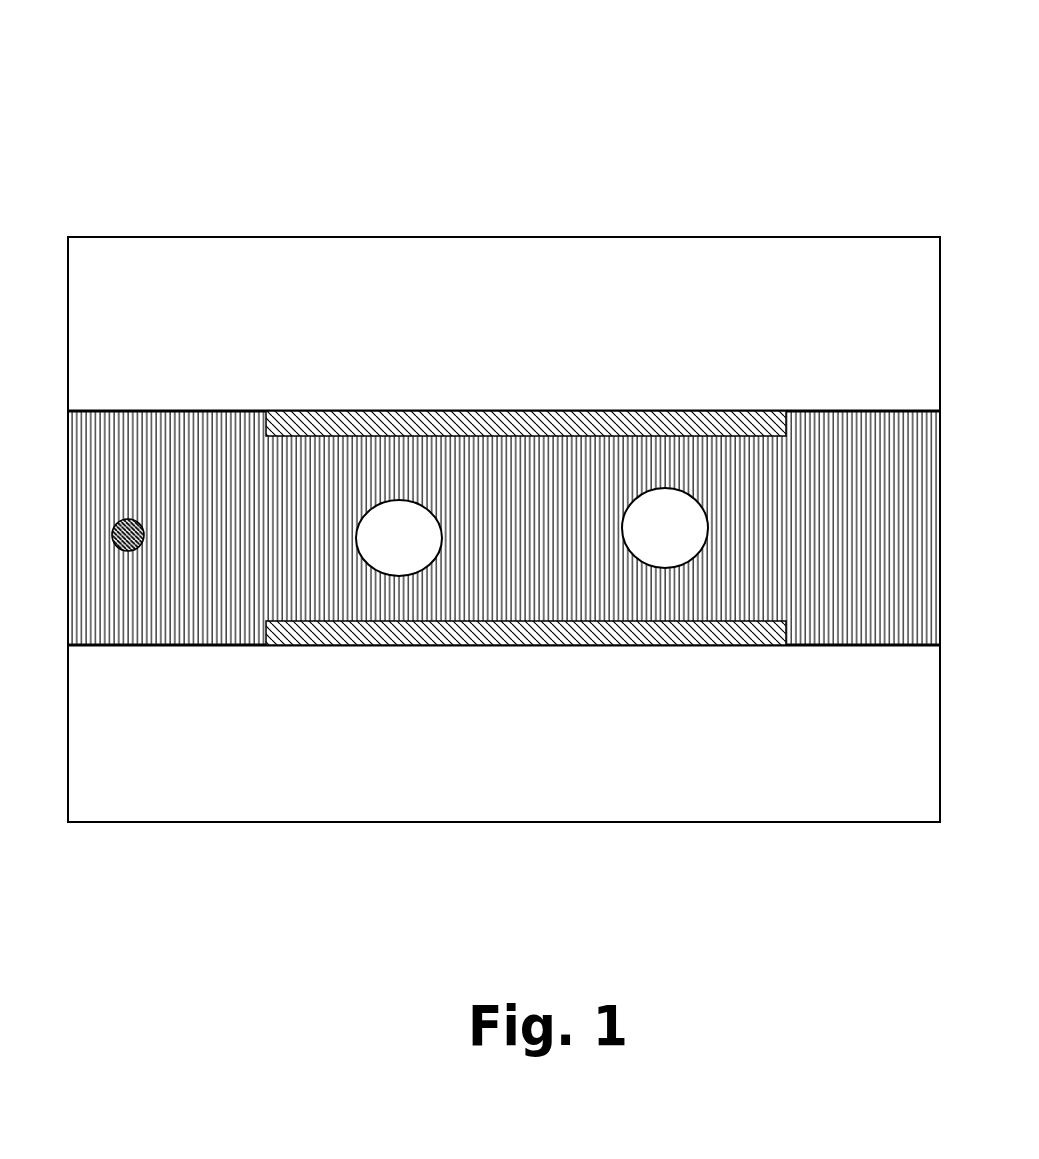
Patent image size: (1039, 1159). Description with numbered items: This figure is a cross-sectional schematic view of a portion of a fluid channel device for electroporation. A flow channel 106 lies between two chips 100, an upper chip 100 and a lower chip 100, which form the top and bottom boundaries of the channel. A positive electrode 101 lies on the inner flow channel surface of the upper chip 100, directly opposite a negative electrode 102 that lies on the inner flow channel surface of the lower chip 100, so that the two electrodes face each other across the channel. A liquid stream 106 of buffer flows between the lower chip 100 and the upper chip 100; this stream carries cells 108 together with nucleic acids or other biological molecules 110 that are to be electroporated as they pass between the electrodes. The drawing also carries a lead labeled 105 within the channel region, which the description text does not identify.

The chip 100 is at (248, 252).
The positive electrode 101 is at (495, 408).
The negative electrode 102 is at (456, 648).
The fluid medium 105 is at (243, 543).
The flow channel 106 is at (62, 543).
The cells 108 is at (397, 559).
The nucleic acids or other biological molecules 110 is at (140, 561).